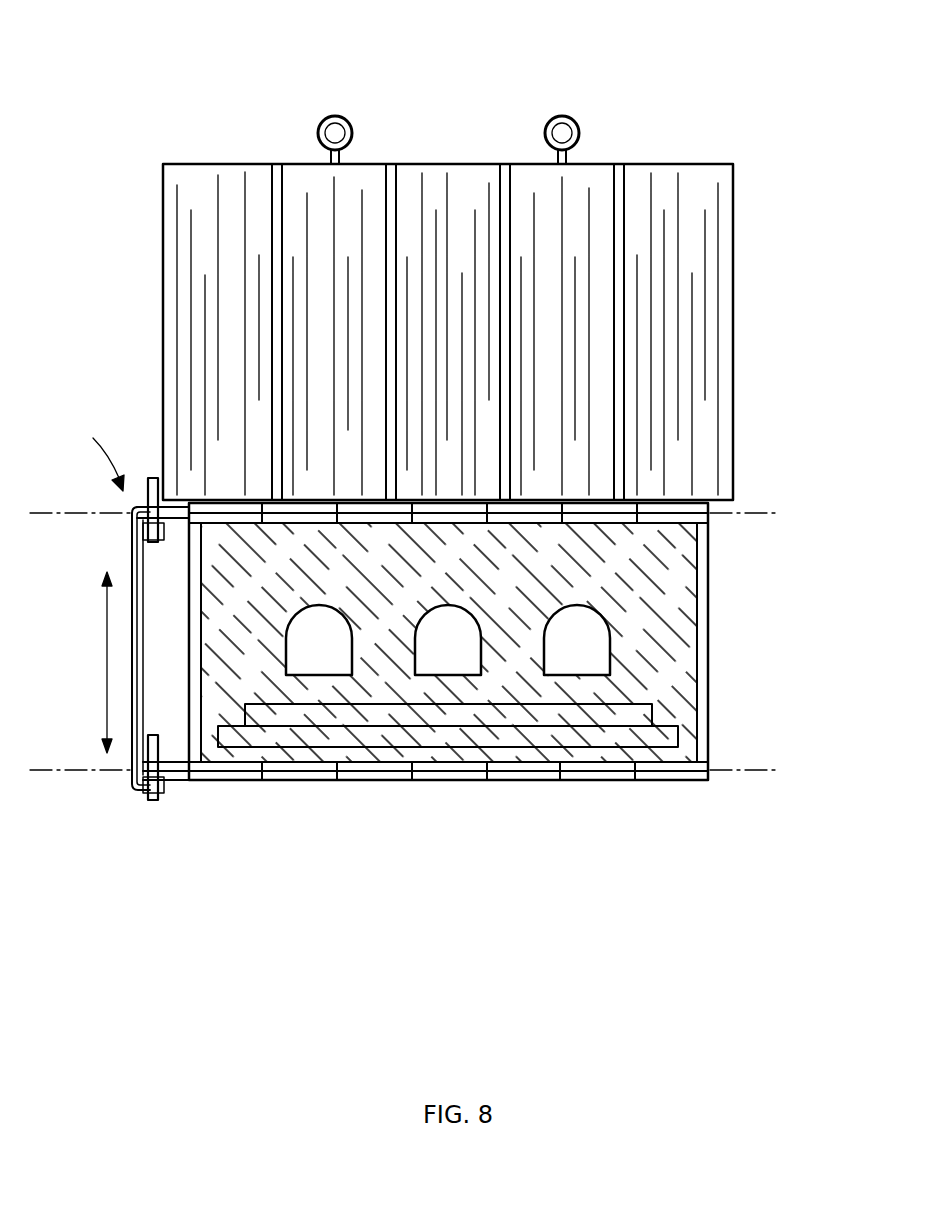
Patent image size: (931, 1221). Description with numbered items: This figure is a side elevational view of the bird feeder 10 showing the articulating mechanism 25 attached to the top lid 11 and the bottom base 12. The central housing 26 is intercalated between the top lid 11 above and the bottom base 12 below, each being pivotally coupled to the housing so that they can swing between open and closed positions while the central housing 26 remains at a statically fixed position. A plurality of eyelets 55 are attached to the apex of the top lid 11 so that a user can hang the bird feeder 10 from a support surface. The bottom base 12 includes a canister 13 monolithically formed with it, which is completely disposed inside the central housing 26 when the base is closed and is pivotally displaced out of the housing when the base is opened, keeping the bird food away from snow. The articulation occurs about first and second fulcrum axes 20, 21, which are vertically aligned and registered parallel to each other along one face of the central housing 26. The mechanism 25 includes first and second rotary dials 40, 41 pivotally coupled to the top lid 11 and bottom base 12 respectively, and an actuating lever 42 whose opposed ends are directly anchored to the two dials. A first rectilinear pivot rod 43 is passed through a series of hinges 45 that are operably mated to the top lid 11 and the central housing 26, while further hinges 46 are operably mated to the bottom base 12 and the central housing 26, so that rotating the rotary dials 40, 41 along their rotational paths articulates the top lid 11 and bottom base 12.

The bird feeder 10 is at (400, 97).
The top lid 11 is at (712, 224).
The bottom base 12 is at (640, 782).
The canister 13 is at (220, 772).
The first fulcrum axis 20 is at (52, 508).
The second fulcrum axis 21 is at (52, 773).
The mechanism 25 is at (94, 453).
The central housing 26 is at (684, 592).
The first rotary dial 40 is at (150, 478).
The second rotary dial 41 is at (150, 797).
The actuating lever 42 is at (138, 652).
The first rectilinear pivot rod 43 is at (178, 520).
The hinges 45 is at (240, 510).
The hinges 46 is at (253, 778).
The eyelets 55 is at (320, 117).